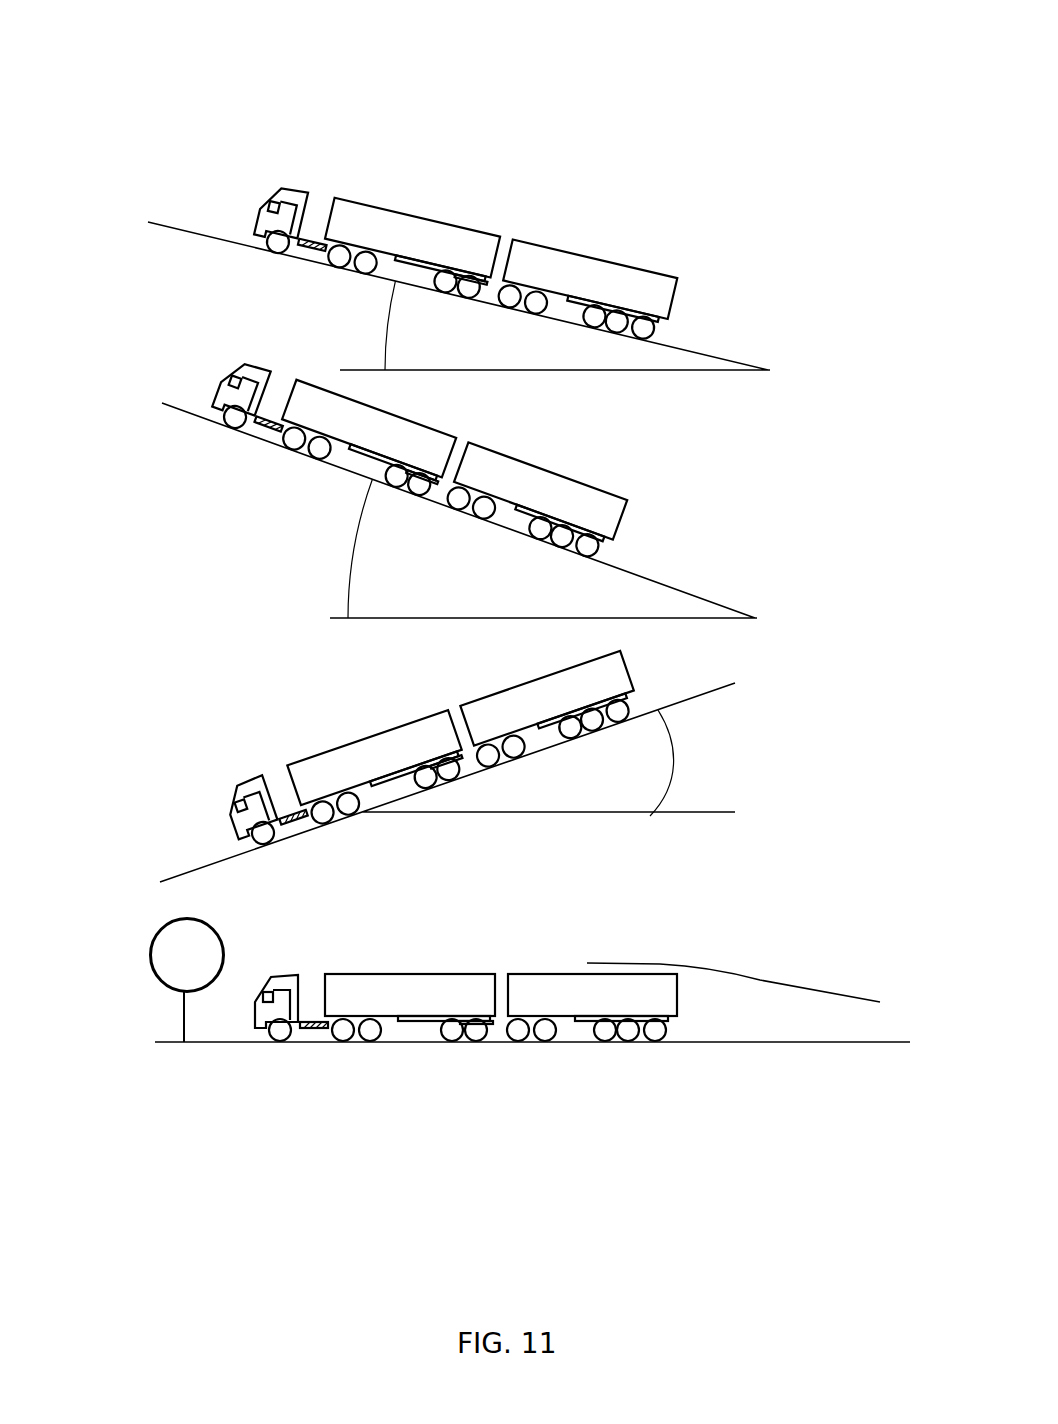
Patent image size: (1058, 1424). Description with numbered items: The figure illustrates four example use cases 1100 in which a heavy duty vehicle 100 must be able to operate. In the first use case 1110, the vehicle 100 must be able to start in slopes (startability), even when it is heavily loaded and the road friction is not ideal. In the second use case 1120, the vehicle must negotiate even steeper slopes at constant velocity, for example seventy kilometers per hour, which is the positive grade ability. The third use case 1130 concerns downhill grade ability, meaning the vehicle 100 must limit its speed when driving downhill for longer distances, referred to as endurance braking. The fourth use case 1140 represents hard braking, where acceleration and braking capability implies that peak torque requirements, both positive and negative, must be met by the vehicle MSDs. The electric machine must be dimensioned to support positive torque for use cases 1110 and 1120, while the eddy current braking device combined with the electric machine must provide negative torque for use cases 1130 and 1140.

The use cases 1100 is at (767, 78).
The heavy duty vehicle 100 is at (440, 193).
The startability use case 1110 is at (404, 296).
The positive grade ability use case 1120 is at (397, 510).
The downhill grade ability use case 1130 is at (386, 782).
The hard braking use case 1140 is at (474, 981).